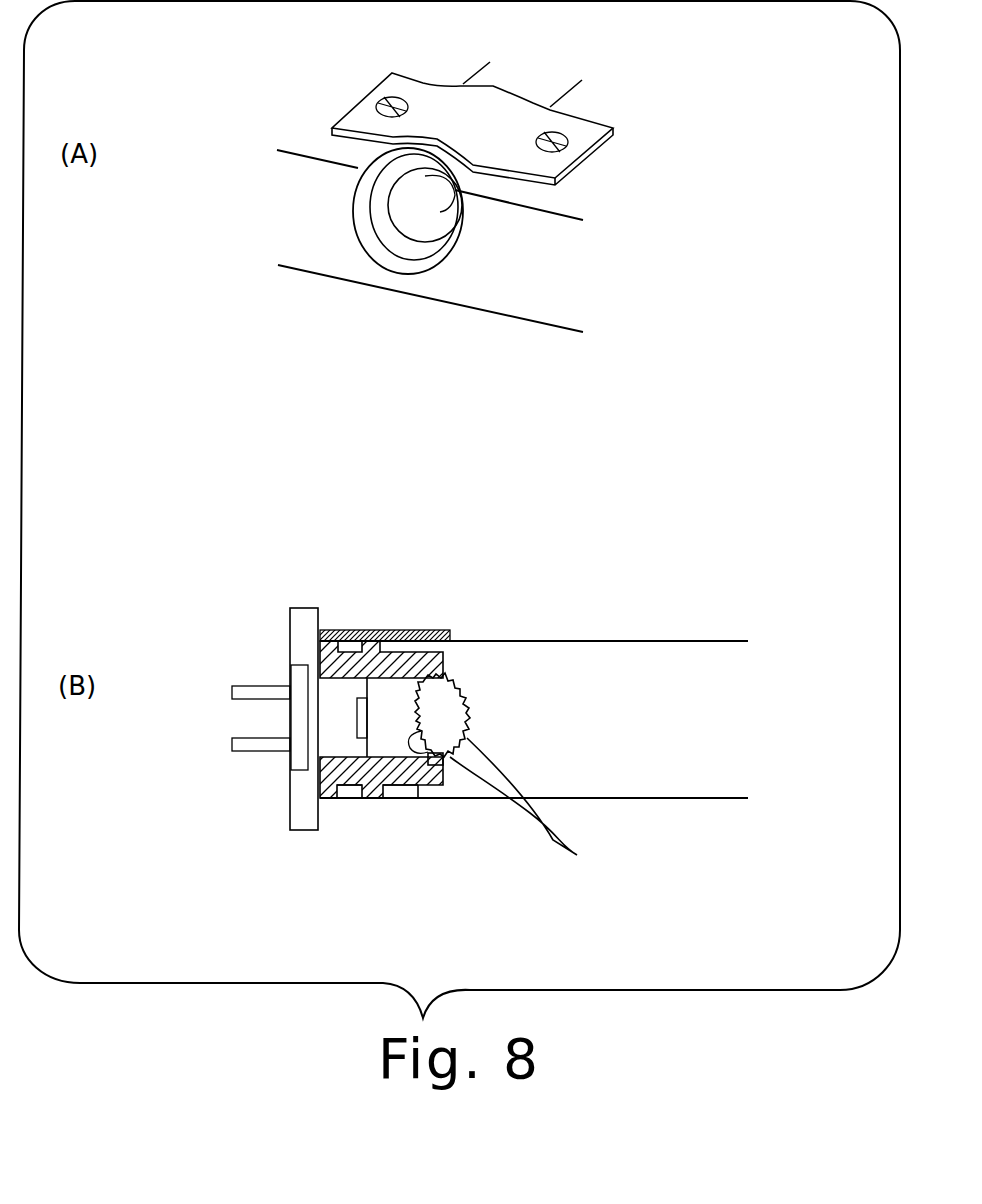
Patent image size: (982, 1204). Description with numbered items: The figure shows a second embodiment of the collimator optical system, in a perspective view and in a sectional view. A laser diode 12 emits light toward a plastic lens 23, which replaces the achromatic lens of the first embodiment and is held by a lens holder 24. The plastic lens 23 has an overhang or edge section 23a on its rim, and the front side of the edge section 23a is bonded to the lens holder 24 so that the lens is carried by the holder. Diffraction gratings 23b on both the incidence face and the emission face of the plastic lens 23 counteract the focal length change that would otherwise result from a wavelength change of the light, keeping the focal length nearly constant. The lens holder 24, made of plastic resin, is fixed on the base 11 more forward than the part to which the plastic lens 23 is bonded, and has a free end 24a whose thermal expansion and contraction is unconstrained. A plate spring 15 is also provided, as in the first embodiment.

The base 11 is at (500, 297).
The laser diode 12 is at (295, 823).
The plate spring 15 is at (600, 133).
The plastic lens 23 is at (462, 697).
The edge section 23a is at (463, 790).
The diffraction gratings 23b is at (545, 804).
The lens holder 24 is at (408, 262).
The free end 24a is at (420, 790).